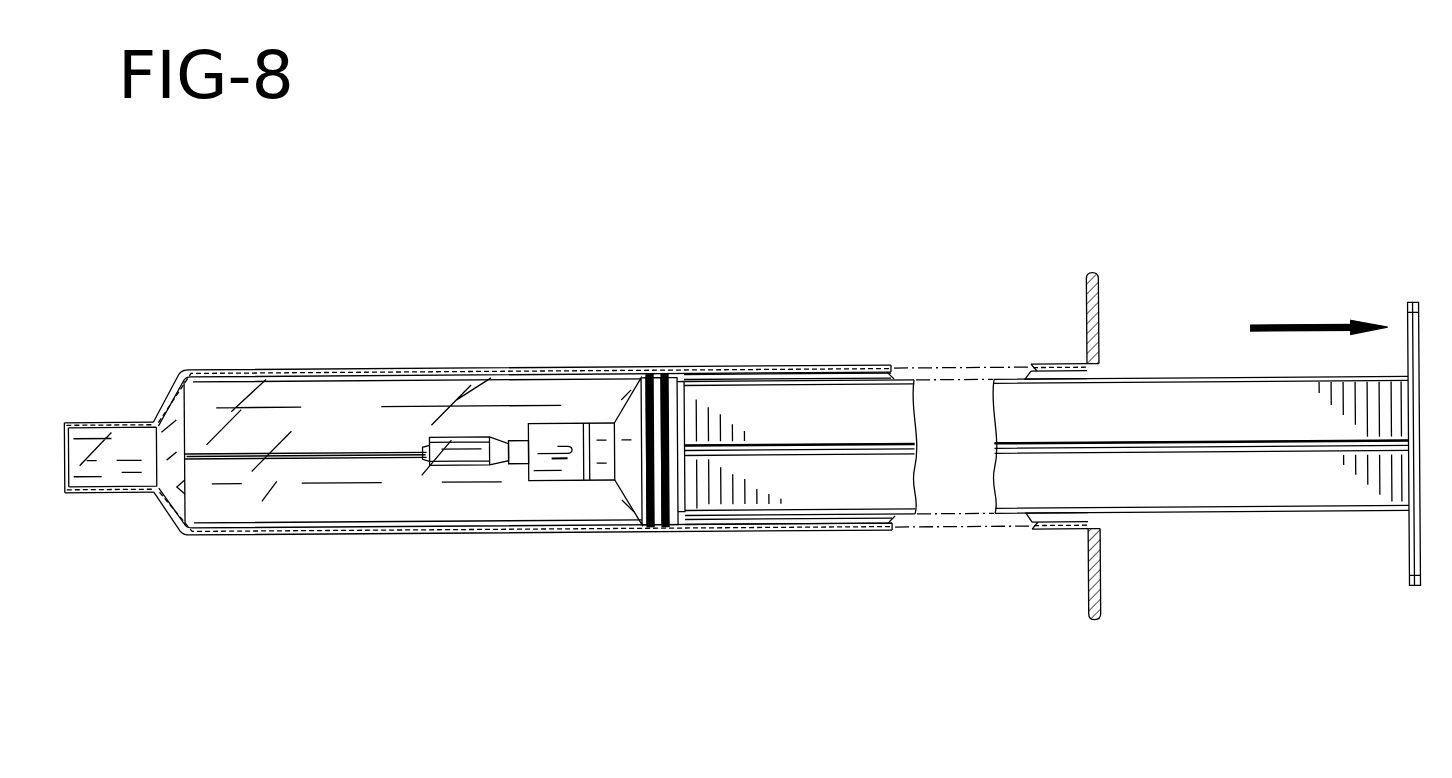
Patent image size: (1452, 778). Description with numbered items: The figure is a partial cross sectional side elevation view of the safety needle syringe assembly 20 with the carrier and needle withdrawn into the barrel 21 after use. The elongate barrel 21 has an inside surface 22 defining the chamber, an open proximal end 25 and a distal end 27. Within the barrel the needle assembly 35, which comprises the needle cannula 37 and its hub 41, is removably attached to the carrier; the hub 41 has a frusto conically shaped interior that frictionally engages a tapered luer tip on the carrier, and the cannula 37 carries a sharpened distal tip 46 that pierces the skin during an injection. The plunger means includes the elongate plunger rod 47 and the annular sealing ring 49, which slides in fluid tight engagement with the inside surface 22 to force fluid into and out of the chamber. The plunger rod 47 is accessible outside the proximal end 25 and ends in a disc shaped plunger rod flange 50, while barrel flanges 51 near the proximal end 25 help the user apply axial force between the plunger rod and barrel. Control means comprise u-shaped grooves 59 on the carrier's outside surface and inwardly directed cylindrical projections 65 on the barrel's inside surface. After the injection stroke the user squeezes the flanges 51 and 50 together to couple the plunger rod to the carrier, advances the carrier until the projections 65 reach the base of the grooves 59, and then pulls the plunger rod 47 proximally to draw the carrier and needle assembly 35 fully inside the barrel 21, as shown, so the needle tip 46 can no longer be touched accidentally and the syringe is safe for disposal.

The syringe assembly 20 is at (976, 175).
The barrel 21 is at (757, 367).
The inside surface 22 is at (848, 385).
The open proximal end 25 is at (1098, 335).
The distal end 27 is at (113, 425).
The needle assembly 35 is at (438, 437).
The needle cannula 37 is at (330, 453).
The hub 41 is at (517, 462).
The sharpened distal tip 46 is at (178, 485).
The plunger rod 47 is at (1233, 490).
The annular sealing ring 49 is at (662, 532).
The plunger rod flange 50 is at (1410, 562).
The barrel flanges 51 is at (1083, 575).
The u-shaped grooves 59 is at (541, 448).
The inwardly directed projections 65 is at (89, 458).